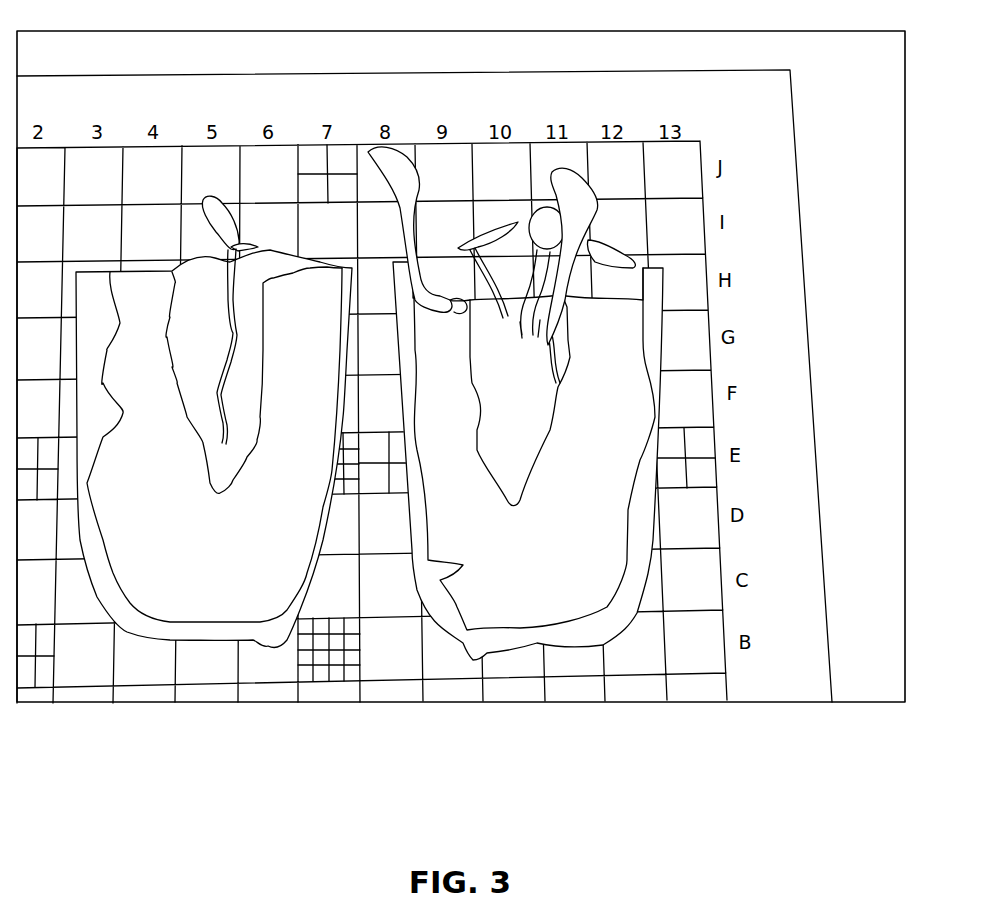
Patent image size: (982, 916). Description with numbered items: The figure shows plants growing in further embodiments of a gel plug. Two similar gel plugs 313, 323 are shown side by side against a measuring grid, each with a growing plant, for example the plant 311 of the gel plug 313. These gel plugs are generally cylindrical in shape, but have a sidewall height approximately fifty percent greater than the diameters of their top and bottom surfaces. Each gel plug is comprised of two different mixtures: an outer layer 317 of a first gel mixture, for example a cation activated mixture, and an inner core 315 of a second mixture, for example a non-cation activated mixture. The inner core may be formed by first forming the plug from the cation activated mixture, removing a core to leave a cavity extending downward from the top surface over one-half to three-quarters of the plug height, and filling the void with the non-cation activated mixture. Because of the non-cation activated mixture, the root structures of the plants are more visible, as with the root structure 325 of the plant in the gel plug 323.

The plant 311 is at (622, 225).
The gel plug 313 is at (627, 630).
The inner core 315 is at (497, 405).
The outer layer 317 is at (540, 565).
The gel plug 323 is at (97, 597).
The root structure 325 is at (223, 423).